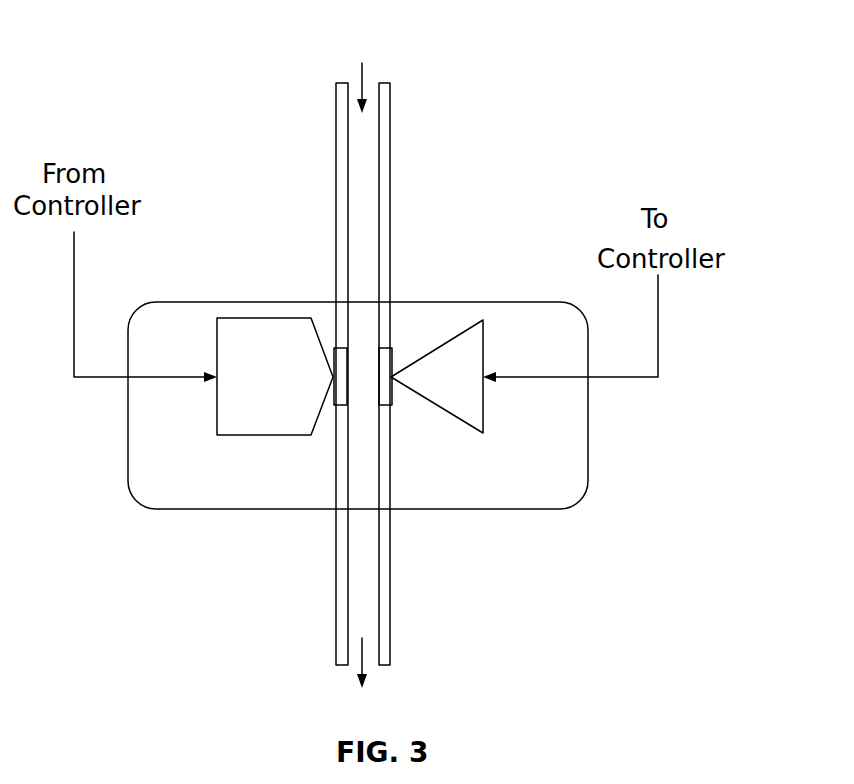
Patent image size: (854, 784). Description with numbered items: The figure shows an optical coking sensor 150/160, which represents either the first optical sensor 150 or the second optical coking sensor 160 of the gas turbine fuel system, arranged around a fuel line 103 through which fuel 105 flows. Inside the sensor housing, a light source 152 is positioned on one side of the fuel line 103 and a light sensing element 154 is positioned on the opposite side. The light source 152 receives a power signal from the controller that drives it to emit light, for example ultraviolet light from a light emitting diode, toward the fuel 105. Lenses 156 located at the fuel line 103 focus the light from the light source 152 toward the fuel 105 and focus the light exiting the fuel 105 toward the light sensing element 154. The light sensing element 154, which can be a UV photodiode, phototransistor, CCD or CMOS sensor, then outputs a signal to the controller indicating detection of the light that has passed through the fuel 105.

The fuel line 103 is at (390, 212).
The fuel 105 is at (363, 72).
The first optical sensor 150 is at (383, 349).
The second optical coking sensor 160 is at (546, 286).
The light source 152 is at (237, 436).
The light sensing element 154 is at (486, 356).
The lenses 156 is at (358, 402).